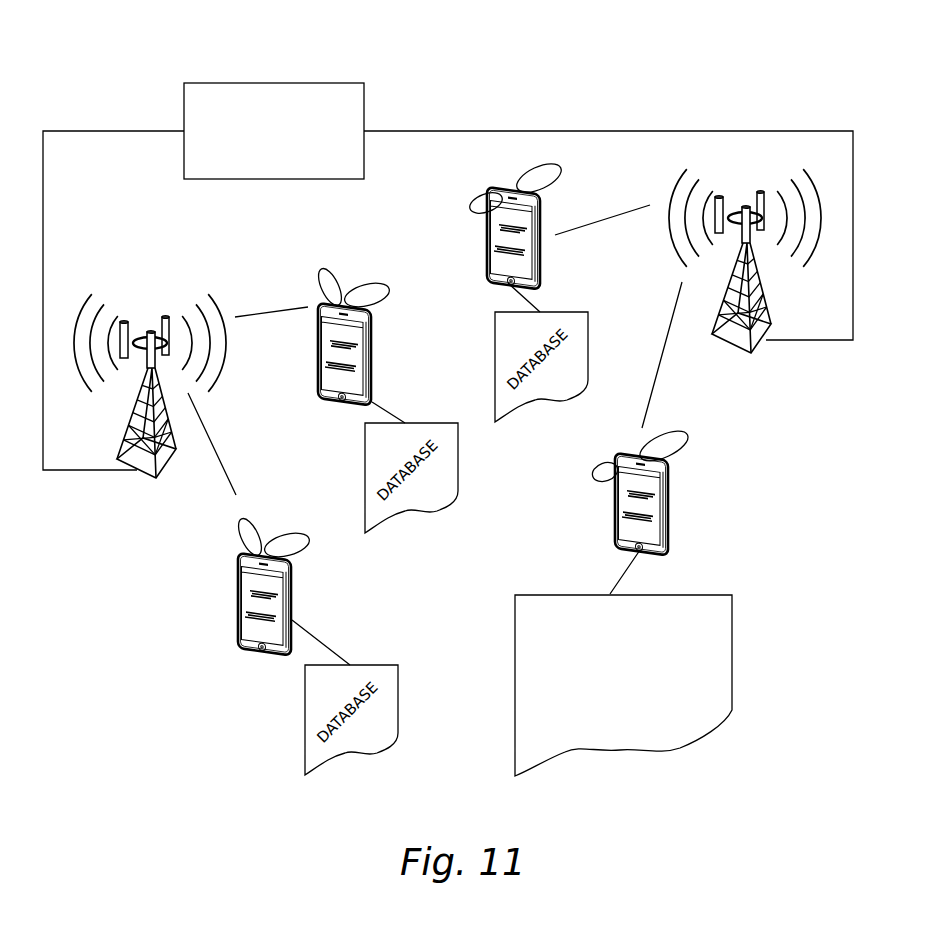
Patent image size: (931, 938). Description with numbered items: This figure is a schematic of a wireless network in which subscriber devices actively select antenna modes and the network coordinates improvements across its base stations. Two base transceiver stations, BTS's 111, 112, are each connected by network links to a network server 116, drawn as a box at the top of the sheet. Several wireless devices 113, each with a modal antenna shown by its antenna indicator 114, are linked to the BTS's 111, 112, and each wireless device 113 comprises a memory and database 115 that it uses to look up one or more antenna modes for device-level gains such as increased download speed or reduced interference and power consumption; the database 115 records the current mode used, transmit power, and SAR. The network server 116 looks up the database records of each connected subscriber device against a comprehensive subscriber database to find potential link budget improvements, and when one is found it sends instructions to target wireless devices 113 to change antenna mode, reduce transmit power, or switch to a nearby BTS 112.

The BTS 111 is at (152, 322).
The BTS 112 is at (756, 287).
The wireless device 113 is at (665, 518).
The wireless link indicator 114 is at (690, 443).
The database 115 is at (733, 628).
The network server 116 is at (264, 82).